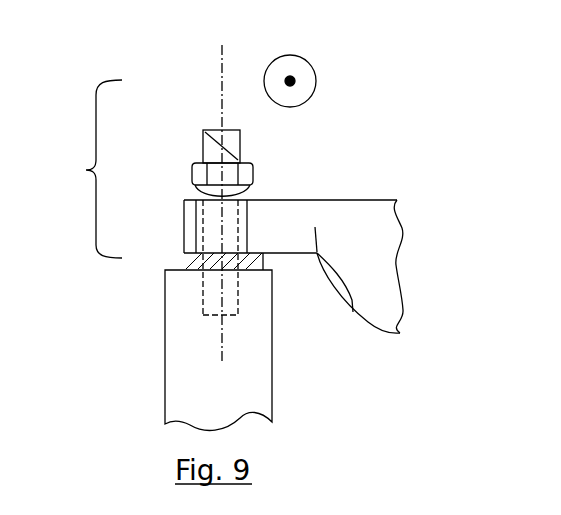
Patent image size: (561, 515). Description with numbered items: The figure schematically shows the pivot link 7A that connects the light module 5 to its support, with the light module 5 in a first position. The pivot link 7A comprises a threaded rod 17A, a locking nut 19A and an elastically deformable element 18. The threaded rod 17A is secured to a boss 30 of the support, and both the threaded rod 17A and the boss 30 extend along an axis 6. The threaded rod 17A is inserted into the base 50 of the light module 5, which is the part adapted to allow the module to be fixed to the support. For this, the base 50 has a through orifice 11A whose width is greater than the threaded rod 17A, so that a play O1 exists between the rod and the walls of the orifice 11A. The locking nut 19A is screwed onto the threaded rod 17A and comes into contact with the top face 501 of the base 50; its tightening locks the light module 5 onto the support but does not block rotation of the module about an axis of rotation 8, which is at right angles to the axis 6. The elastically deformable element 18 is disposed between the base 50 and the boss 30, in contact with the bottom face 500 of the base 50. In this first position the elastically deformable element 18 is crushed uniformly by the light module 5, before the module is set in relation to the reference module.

The axis 6 is at (222, 62).
The axis of rotation 8 is at (290, 81).
The pivot link 7A is at (86, 170).
The threaded rod 17A is at (203, 133).
The locking nut 19A is at (192, 183).
The elastically deformable element 18 is at (184, 255).
The play O1 is at (249, 206).
The through orifice 11A is at (249, 230).
The top face 501 is at (373, 200).
The light module 5 is at (379, 276).
The base 50 is at (353, 312).
The bottom face 500 is at (281, 256).
The boss 30 is at (228, 385).